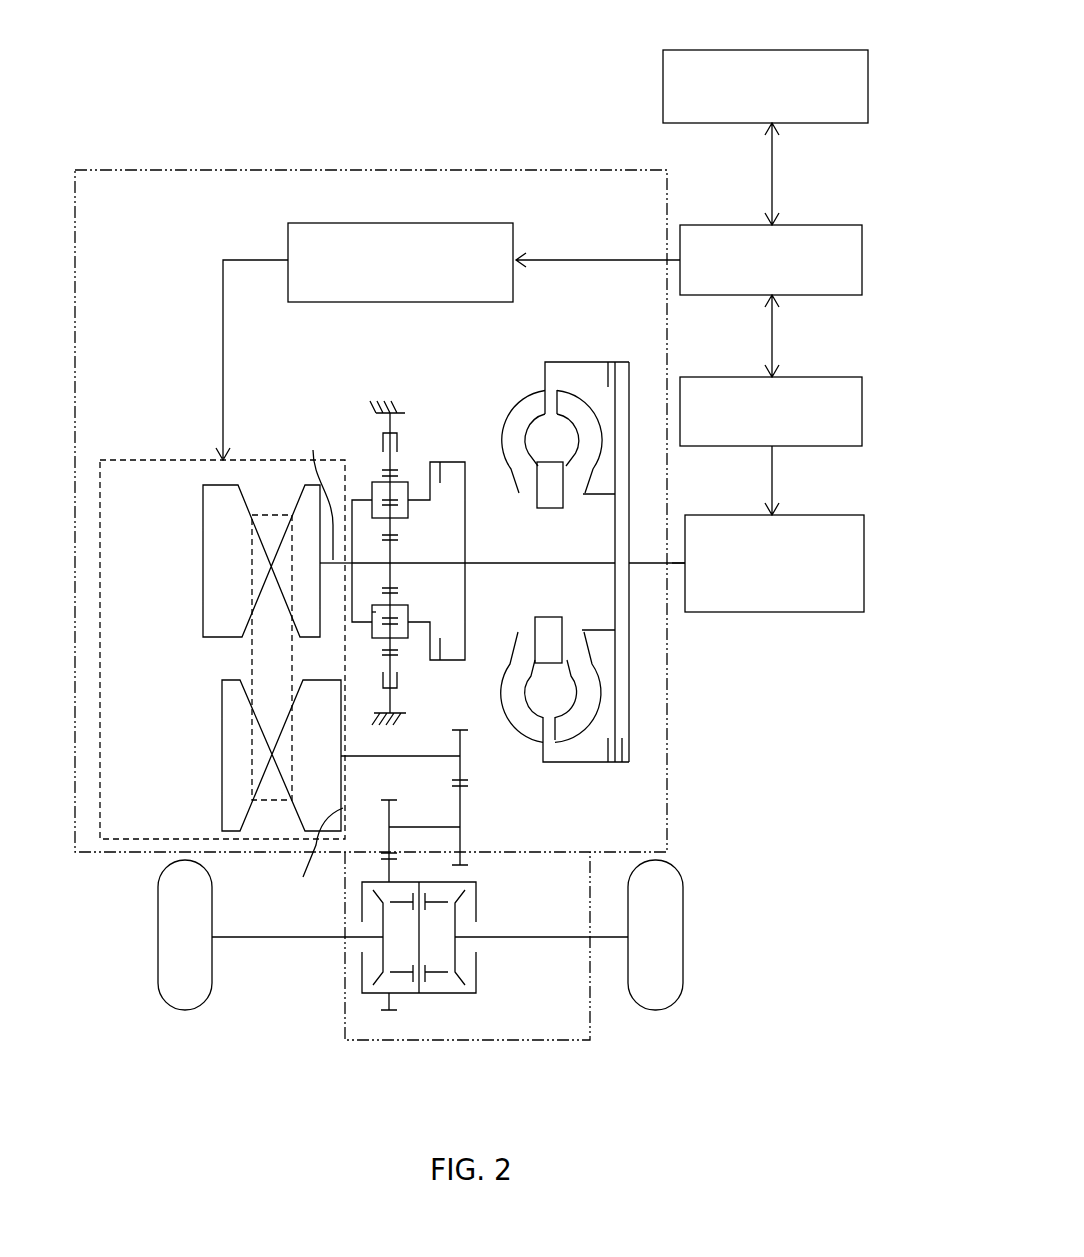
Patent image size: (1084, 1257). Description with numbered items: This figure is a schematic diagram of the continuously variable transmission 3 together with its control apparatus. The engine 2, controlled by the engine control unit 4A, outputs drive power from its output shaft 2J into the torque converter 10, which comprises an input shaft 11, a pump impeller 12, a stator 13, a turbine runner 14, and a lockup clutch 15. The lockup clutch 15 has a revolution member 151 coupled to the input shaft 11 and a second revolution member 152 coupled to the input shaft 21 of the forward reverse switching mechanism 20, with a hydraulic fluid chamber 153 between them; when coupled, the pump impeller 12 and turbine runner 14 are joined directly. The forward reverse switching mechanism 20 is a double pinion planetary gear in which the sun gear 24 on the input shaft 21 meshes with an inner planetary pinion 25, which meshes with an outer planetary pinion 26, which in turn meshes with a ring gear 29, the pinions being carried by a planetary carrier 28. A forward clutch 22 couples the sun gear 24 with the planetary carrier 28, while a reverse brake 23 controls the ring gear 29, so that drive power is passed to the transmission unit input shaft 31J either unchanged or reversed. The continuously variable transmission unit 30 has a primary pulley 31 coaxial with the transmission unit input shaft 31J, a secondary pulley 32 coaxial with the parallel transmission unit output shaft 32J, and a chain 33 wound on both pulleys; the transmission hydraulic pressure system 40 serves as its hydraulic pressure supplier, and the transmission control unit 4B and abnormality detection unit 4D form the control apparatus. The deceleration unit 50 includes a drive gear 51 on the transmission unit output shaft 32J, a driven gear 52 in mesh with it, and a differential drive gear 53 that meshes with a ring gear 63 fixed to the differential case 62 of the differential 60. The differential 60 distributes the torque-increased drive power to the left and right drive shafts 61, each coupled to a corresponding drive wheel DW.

The engine 2 is at (843, 612).
The output shaft 2J is at (677, 563).
The continuously variable transmission 3 is at (513, 1042).
The engine control unit 4A is at (850, 377).
The transmission control unit 4B is at (850, 225).
The abnormality detection unit 4D is at (847, 50).
The torque converter 10 is at (538, 550).
The input shaft 11 is at (646, 560).
The pump impeller 12 is at (512, 468).
The stator 13 is at (548, 625).
The turbine runner 14 is at (578, 470).
The lockup clutch 15 is at (674, 601).
The revolution member 151 is at (629, 652).
The revolution member 152 is at (615, 698).
The hydraulic fluid chamber 153 is at (622, 731).
The forward reverse switching mechanism 20 is at (361, 367).
The input shaft 21 is at (490, 563).
The forward clutch 22 is at (436, 445).
The reverse brake 23 is at (410, 692).
The sun gear 24 is at (398, 586).
The inner planetary pinion 25 is at (398, 537).
The outer planetary pinion 26 is at (387, 465).
The planetary carrier 28 is at (372, 612).
The ring gear 29 is at (382, 652).
The continuously variable transmission unit 30 is at (148, 458).
The primary pulley 31 is at (190, 547).
The transmission unit input shaft 31J is at (315, 491).
The secondary pulley 32 is at (210, 742).
The transmission unit output shaft 32J is at (310, 860).
The chain 33 is at (252, 650).
The transmission hydraulic pressure system 40 is at (482, 225).
The deceleration unit 50 is at (474, 806).
The drive gear 51 is at (462, 742).
The driven gear 52 is at (465, 853).
The differential drive gear 53 is at (389, 817).
The differential 60 is at (466, 960).
The drive shaft 61 is at (255, 938).
The differential case 62 is at (476, 900).
The ring gear 63 is at (393, 865).
The drive wheel DW is at (182, 1010).